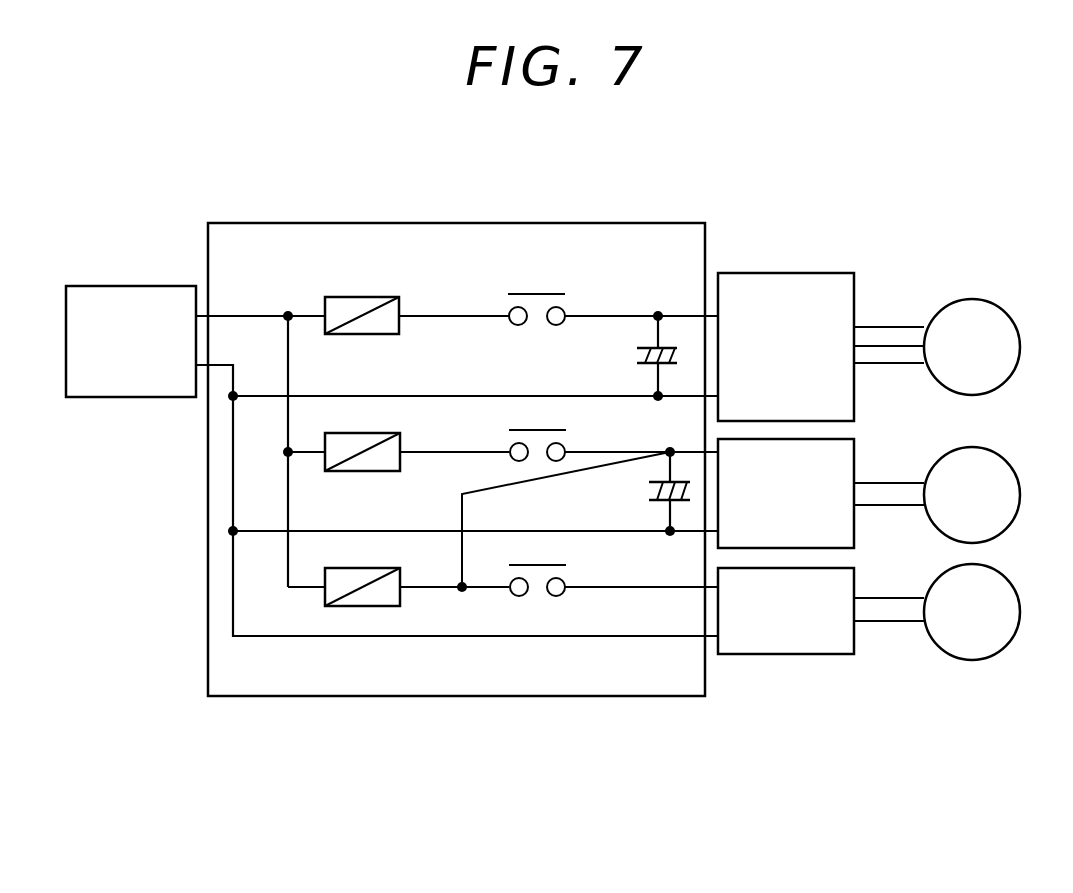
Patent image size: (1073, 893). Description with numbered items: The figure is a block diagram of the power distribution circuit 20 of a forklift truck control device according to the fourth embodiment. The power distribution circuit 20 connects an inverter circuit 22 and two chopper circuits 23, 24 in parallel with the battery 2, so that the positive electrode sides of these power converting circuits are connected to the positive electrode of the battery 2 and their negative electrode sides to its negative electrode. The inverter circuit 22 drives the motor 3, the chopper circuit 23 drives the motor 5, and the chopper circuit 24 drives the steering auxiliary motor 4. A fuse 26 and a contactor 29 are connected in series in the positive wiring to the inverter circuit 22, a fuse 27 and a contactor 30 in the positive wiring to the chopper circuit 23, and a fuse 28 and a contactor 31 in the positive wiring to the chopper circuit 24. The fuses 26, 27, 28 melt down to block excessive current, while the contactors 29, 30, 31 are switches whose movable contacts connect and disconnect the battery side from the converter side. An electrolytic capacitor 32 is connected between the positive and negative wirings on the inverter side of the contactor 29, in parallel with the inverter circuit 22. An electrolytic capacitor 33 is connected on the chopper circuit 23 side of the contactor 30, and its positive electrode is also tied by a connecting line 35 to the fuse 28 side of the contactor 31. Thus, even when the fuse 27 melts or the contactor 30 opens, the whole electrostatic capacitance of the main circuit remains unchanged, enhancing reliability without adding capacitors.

The battery 2 is at (154, 284).
The power distribution circuit 20 is at (626, 222).
The inverter circuit 22 is at (845, 288).
The chopper circuit 23 is at (848, 452).
The chopper circuit 24 is at (848, 578).
The motor 3 is at (1017, 325).
The motor 5 is at (1013, 470).
The steering auxiliary motor 4 is at (1013, 586).
The fuse 26 is at (377, 295).
The fuse 27 is at (378, 431).
The fuse 28 is at (378, 566).
The contactor 29 is at (566, 302).
The contactor 30 is at (566, 438).
The contactor 31 is at (568, 573).
The electrolytic capacitor 32 is at (625, 351).
The electrolytic capacitor 33 is at (637, 491).
The connecting line 35 is at (457, 507).